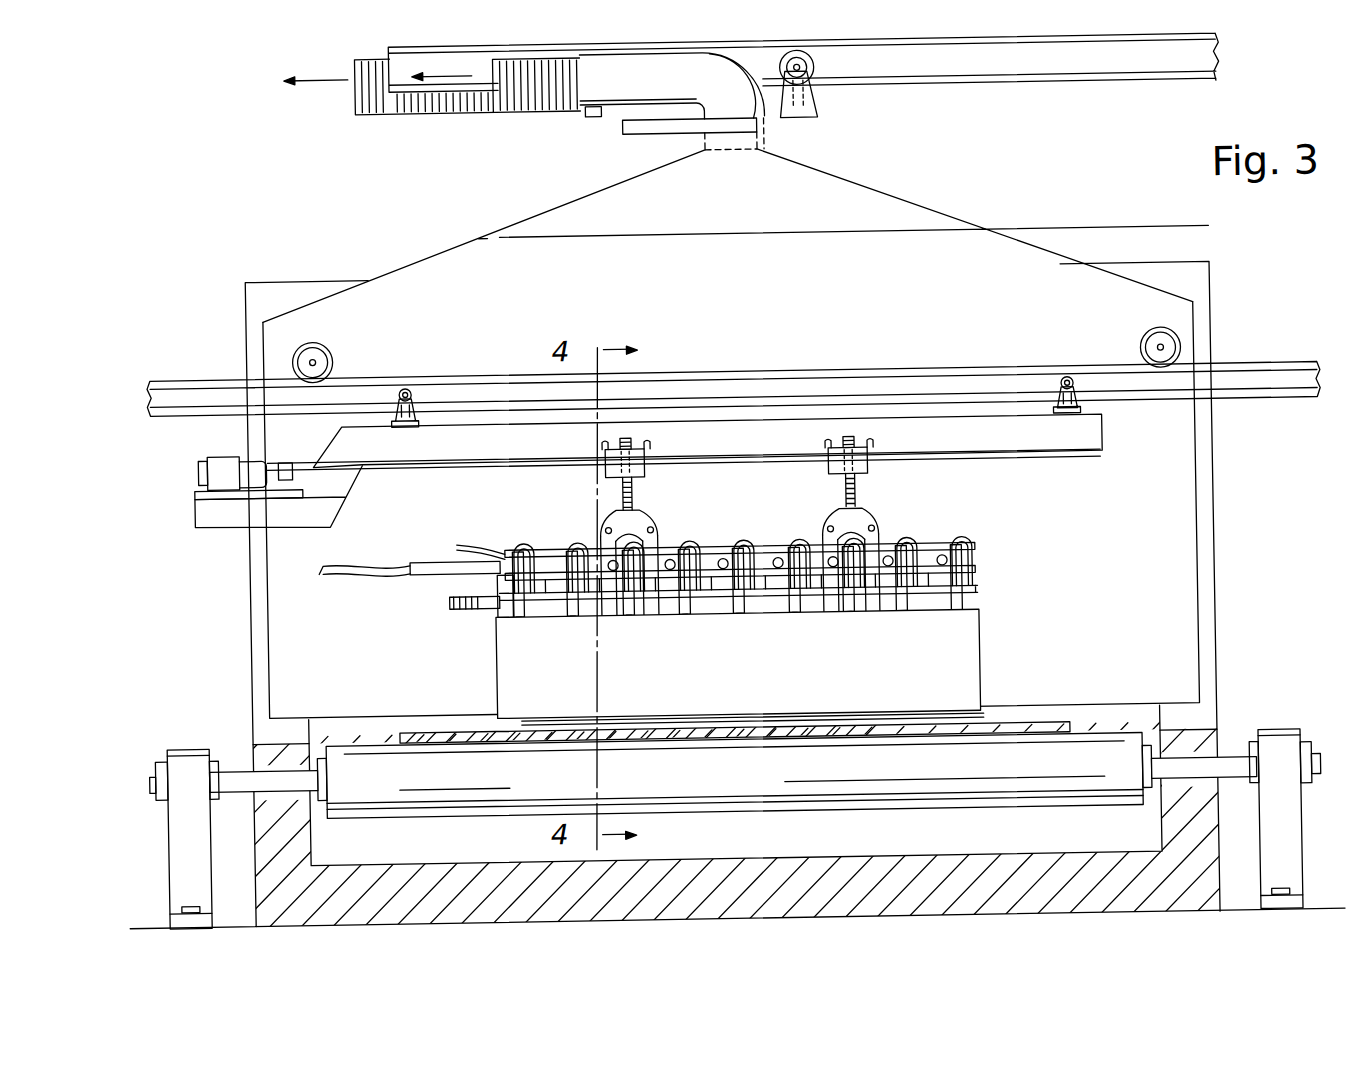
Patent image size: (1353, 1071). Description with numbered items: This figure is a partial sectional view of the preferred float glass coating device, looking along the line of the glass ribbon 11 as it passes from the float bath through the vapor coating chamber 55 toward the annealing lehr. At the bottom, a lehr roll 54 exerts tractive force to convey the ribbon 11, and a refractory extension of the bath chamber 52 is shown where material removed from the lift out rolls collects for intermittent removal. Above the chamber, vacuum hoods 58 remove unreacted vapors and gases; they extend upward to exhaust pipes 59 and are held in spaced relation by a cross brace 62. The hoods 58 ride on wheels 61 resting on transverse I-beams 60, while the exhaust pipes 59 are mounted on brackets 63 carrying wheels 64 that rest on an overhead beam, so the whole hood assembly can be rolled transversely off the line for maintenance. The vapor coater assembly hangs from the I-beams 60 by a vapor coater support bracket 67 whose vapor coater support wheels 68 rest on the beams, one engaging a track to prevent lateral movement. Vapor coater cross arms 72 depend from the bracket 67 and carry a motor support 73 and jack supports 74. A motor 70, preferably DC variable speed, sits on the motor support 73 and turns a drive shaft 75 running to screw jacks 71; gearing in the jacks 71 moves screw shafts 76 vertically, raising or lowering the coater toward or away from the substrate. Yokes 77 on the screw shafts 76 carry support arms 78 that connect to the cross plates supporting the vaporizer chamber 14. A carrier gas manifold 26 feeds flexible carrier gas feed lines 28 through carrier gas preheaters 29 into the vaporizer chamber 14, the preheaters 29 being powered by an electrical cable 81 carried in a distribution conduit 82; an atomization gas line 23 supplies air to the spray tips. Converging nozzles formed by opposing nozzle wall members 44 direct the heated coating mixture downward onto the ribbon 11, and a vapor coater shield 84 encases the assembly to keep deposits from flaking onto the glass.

The ribbon of glass 11 is at (429, 735).
The vaporizer chamber 14 is at (975, 608).
The atomization gas line 23 is at (462, 543).
The carrier gas manifold 26 is at (485, 605).
The carrier gas feed lines 28 is at (969, 553).
The carrier gas preheaters 29 is at (974, 578).
The nozzle wall members 44 is at (981, 722).
The refractory extension of the bath chamber 52 is at (734, 853).
The lehr rolls 54 is at (907, 819).
The vapor coating chamber 55 is at (1096, 739).
The vacuum hoods 58 is at (914, 304).
The exhaust pipes 59 is at (771, 136).
The I-beams 60 is at (757, 373).
The wheels 61 is at (333, 344).
The cross brace 62 is at (598, 116).
The brackets 63 is at (819, 102).
The wheels 64 is at (822, 64).
The vapor coater support bracket 67 is at (416, 420).
The vapor coater support wheels 68 is at (412, 387).
The motor 70 is at (208, 457).
The screw jacks 71 is at (649, 468).
The vapor coater cross arms 72 is at (761, 449).
The motor support 73 is at (197, 486).
The jack supports 74 is at (649, 442).
The drive shaft 75 is at (433, 465).
The screw shafts 76 is at (632, 491).
The yokes 77 is at (640, 524).
The support arms 78 is at (654, 544).
The electrical cable 81 is at (371, 561).
The distribution conduit 82 is at (436, 558).
The vapor coater shield 84 is at (707, 683).